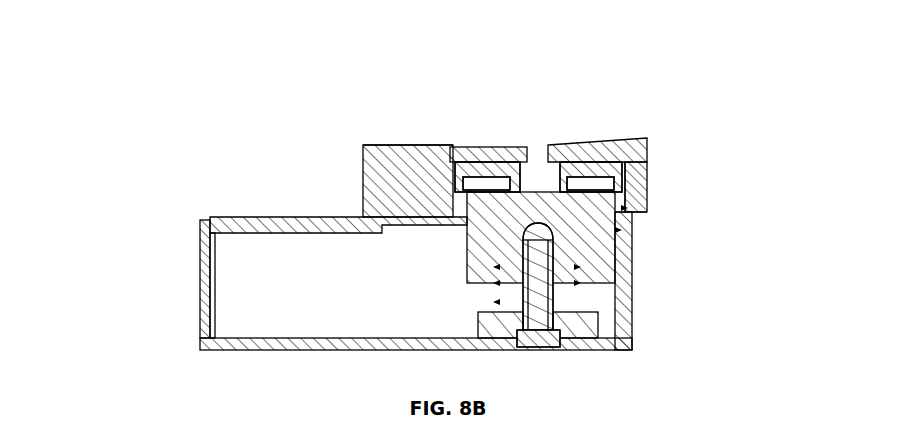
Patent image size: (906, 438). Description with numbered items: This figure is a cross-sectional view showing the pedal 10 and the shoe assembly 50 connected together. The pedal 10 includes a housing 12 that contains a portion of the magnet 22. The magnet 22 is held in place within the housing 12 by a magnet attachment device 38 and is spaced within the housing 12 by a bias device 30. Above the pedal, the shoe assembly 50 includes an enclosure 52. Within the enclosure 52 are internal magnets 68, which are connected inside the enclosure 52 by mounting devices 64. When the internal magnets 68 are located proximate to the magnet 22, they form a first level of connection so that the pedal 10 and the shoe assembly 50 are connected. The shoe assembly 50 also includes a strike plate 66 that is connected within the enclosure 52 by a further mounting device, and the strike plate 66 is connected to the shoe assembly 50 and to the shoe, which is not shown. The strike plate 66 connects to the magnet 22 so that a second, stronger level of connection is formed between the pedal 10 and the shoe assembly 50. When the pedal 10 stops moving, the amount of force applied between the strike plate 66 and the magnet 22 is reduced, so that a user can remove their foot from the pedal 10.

The pedal 10 is at (166, 250).
The housing 12 is at (200, 313).
The magnet 22 is at (622, 208).
The bias device 30 is at (579, 302).
The magnet attachment device 38 is at (527, 343).
The shoe assembly 50 is at (357, 141).
The enclosure 52 is at (642, 166).
The mounting devices 64 is at (594, 166).
The strike plate 66 is at (627, 166).
The internal magnets 68 is at (466, 189).